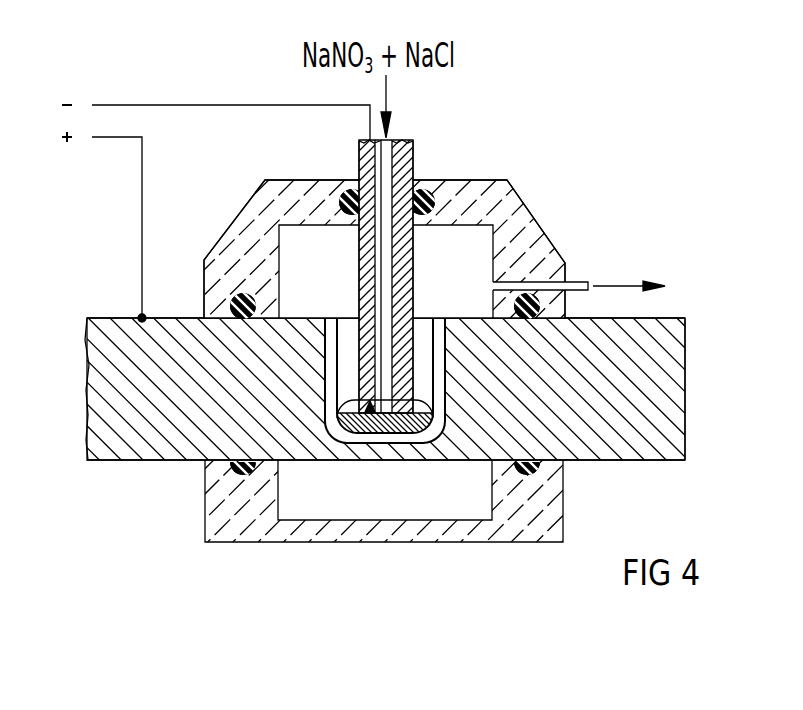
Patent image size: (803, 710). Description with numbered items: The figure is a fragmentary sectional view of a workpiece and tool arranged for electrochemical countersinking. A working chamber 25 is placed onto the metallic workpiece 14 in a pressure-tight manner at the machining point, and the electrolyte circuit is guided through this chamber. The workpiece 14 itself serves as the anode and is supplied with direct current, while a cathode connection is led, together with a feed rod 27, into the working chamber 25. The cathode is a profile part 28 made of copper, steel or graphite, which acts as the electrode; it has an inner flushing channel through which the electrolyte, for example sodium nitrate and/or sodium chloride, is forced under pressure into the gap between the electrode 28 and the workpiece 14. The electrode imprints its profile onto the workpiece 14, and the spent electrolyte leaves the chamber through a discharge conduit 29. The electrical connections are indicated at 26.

The workpiece 14 is at (633, 462).
The working chamber 25 is at (530, 210).
The power supply leads 26 is at (194, 102).
The feed rod 27 is at (412, 160).
The profile part (electrode) 28 is at (406, 434).
The discharge conduit 29 is at (574, 282).